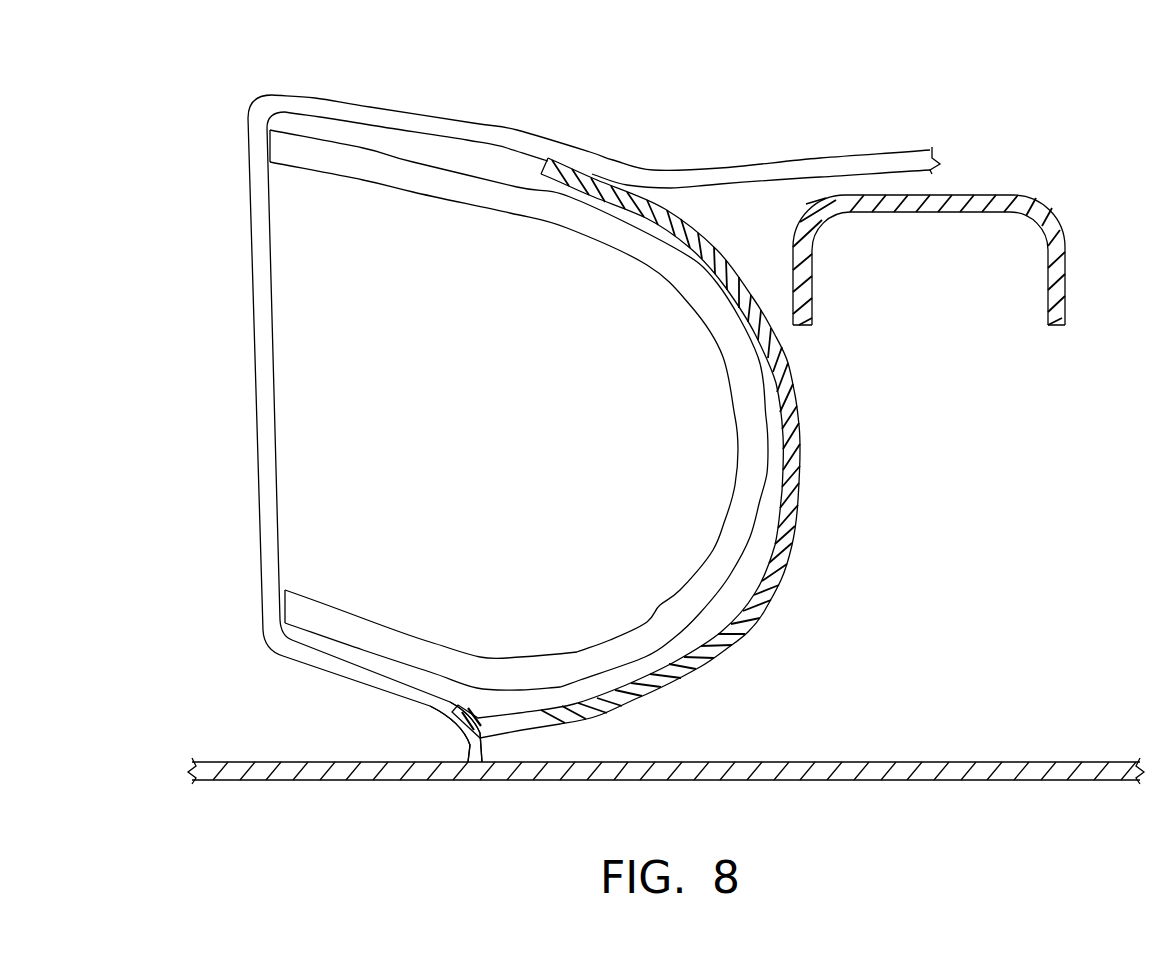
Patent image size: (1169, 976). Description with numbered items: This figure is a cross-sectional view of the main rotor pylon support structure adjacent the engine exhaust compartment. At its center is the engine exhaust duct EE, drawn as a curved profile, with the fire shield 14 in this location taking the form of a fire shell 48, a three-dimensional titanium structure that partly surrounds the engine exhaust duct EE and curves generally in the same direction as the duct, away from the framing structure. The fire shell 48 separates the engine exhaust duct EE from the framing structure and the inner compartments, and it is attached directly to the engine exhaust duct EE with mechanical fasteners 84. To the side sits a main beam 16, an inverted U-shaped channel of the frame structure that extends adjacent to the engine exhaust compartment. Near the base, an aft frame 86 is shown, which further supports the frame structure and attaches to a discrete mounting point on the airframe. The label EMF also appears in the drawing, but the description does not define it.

The fire shield 14 is at (594, 400).
The main beam 16 is at (1065, 303).
The fire shell 48 is at (787, 466).
The mechanical fasteners 84 is at (597, 156).
The aft frame 86 is at (448, 741).
The outer member EMF is at (443, 118).
The engine exhaust duct EE is at (452, 202).